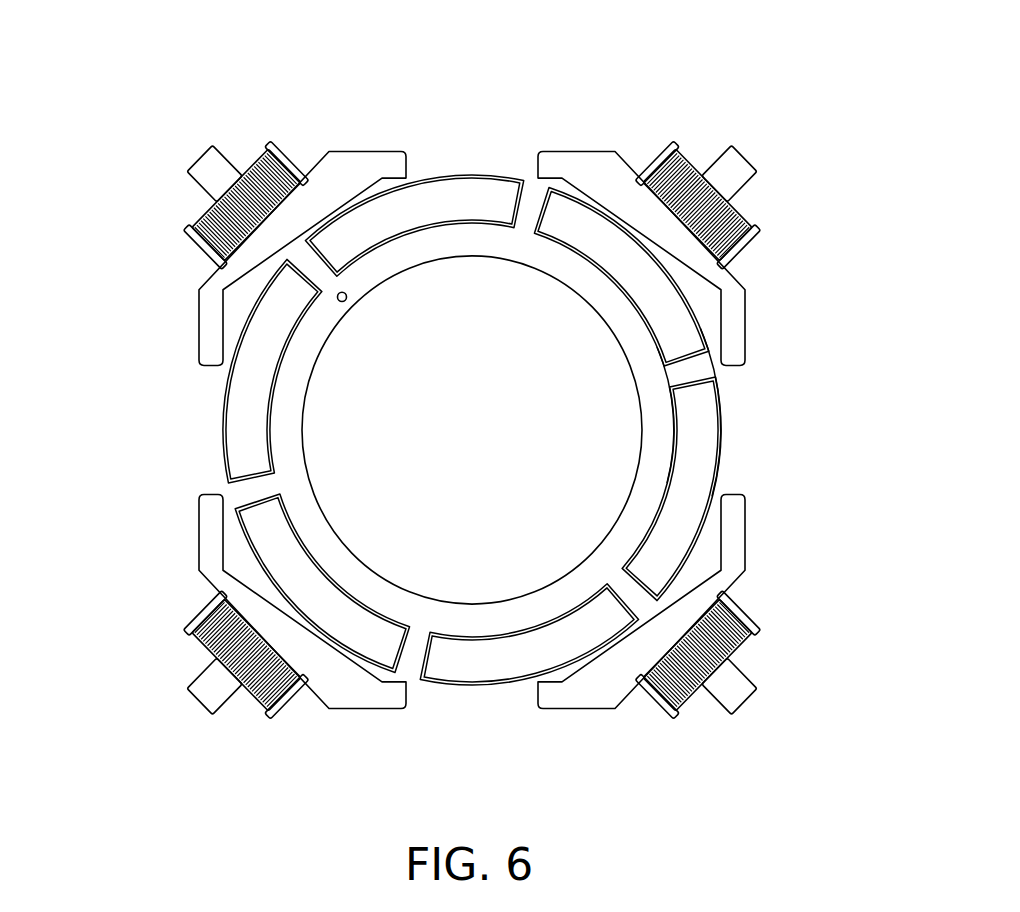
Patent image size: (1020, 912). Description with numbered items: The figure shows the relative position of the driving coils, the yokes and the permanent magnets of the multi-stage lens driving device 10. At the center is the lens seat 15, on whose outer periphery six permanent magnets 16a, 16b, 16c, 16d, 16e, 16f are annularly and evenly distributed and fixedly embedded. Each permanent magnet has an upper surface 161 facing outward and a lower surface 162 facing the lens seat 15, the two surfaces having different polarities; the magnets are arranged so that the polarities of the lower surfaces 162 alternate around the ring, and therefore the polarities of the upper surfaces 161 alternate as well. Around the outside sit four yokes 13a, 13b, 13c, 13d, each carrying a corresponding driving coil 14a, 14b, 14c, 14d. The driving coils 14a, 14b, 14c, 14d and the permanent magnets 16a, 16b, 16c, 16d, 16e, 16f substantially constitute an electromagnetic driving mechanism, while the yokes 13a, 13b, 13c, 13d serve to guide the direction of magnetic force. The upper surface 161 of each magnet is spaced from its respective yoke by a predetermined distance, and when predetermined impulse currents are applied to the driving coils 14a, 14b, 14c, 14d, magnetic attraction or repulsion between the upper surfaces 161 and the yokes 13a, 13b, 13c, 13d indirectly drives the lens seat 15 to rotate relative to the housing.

The multi-stage lens driving device 10 is at (138, 100).
The yoke 13a is at (740, 316).
The yoke 13b is at (213, 312).
The yoke 13c is at (208, 540).
The yoke 13d is at (738, 556).
The driving coil 14a is at (684, 147).
The driving coil 14b is at (274, 147).
The driving coil 14c is at (272, 708).
The driving coil 14d is at (657, 722).
The lens seat 15 is at (640, 370).
The permanent magnet 16a is at (568, 212).
The permanent magnet 16b is at (459, 184).
The permanent magnet 16c is at (236, 416).
The permanent magnet 16d is at (367, 640).
The permanent magnet 16e is at (487, 672).
The permanent magnet 16f is at (708, 433).
The upper surface 161 is at (720, 473).
The lower surface 162 is at (677, 408).